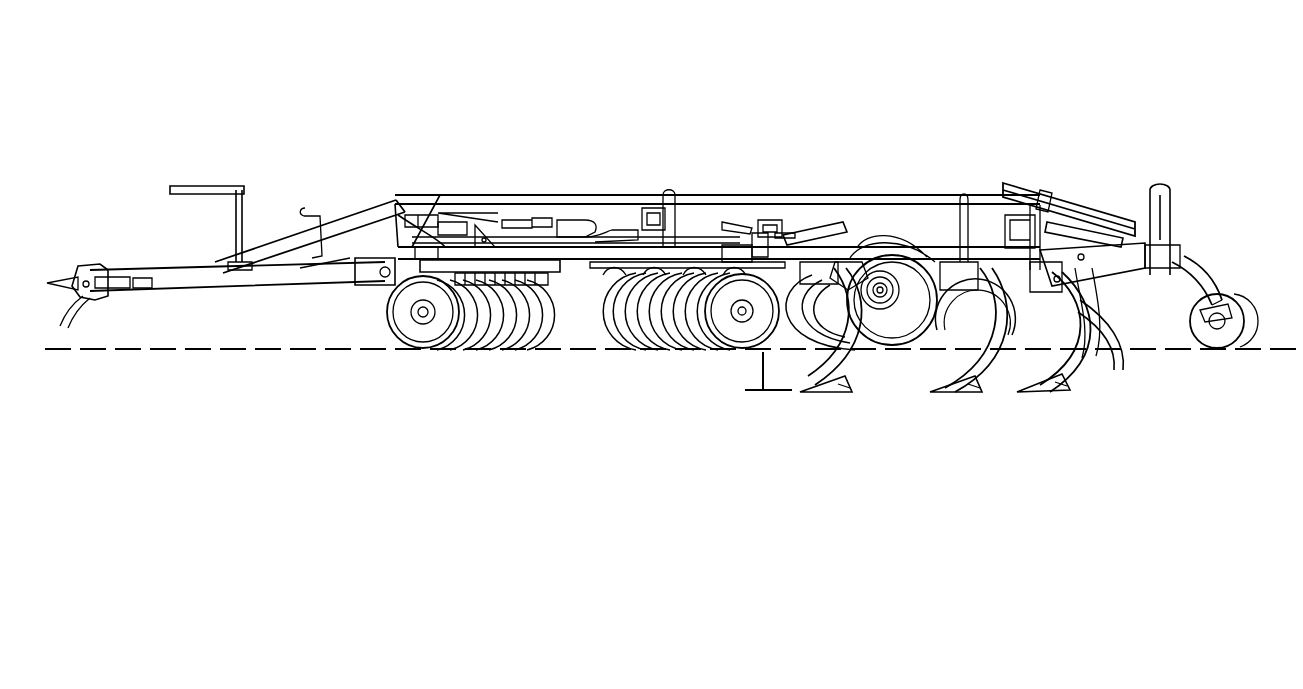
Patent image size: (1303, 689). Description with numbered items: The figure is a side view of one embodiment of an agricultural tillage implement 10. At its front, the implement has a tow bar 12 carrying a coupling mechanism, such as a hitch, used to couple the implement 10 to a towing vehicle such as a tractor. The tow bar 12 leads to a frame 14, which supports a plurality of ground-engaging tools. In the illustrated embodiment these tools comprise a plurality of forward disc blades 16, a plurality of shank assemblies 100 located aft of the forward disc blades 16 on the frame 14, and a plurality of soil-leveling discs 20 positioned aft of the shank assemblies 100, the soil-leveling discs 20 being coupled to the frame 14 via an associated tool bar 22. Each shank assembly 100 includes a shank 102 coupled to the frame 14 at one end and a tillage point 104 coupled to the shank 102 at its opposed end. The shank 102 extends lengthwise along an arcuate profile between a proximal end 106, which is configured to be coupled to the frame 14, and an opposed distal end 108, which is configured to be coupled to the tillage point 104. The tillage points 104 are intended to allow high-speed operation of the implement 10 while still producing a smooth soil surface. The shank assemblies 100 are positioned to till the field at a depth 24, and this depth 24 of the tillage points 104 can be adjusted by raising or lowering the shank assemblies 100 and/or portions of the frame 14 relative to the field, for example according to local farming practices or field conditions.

The tillage implement 10 is at (400, 130).
The tow bar 12 is at (272, 286).
The frame 14 is at (903, 253).
The forward disc blades 16 is at (487, 370).
The soil-leveling discs 20 is at (1214, 358).
The tool bar 22 is at (1155, 255).
The depth 24 is at (762, 370).
The shank assembly 100 is at (955, 308).
The shank 102 is at (862, 340).
The tillage point 104 is at (832, 390).
The proximal end 106 is at (857, 267).
The distal end 108 is at (846, 392).